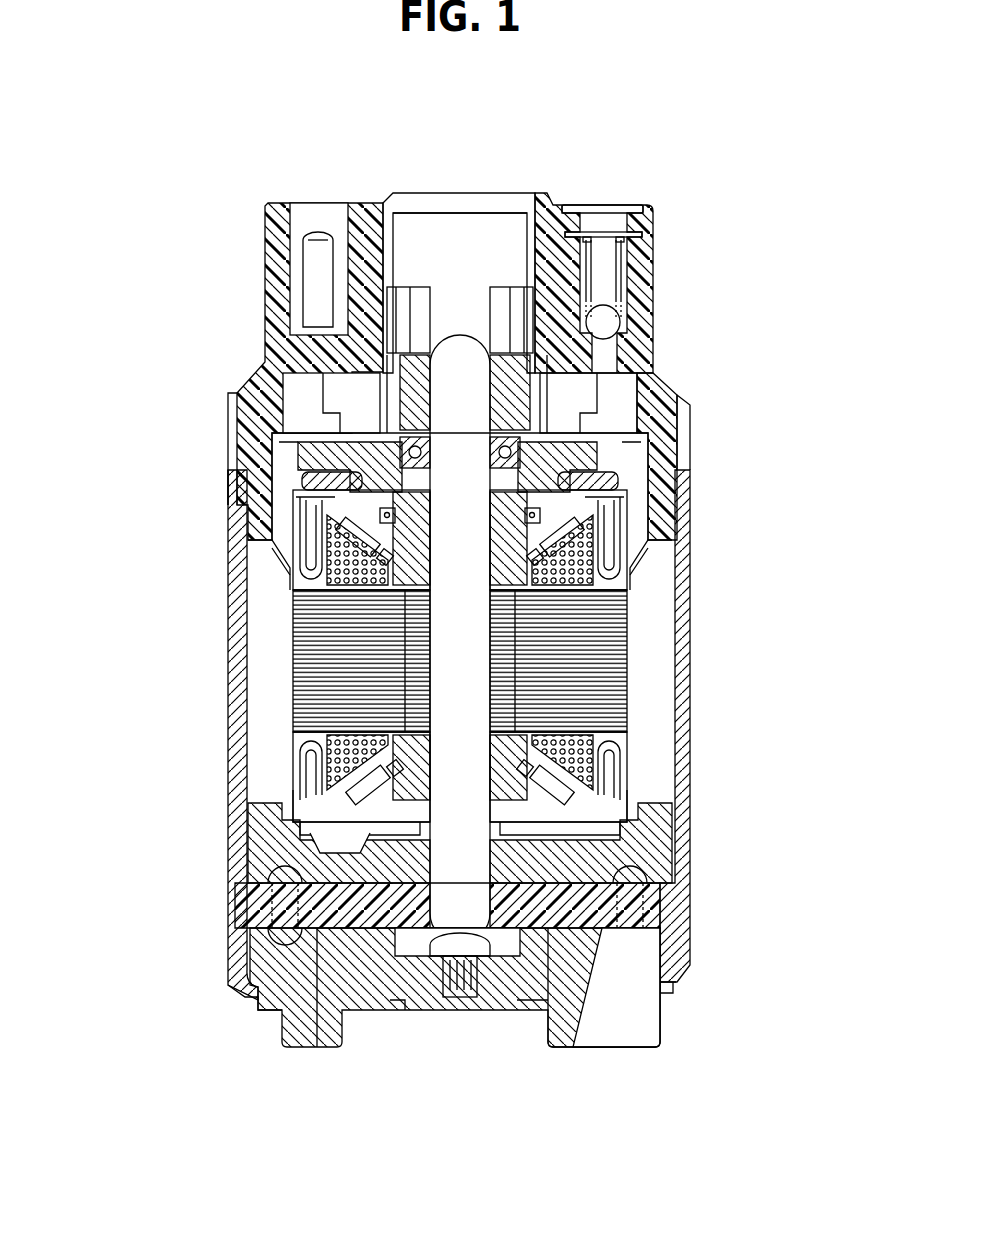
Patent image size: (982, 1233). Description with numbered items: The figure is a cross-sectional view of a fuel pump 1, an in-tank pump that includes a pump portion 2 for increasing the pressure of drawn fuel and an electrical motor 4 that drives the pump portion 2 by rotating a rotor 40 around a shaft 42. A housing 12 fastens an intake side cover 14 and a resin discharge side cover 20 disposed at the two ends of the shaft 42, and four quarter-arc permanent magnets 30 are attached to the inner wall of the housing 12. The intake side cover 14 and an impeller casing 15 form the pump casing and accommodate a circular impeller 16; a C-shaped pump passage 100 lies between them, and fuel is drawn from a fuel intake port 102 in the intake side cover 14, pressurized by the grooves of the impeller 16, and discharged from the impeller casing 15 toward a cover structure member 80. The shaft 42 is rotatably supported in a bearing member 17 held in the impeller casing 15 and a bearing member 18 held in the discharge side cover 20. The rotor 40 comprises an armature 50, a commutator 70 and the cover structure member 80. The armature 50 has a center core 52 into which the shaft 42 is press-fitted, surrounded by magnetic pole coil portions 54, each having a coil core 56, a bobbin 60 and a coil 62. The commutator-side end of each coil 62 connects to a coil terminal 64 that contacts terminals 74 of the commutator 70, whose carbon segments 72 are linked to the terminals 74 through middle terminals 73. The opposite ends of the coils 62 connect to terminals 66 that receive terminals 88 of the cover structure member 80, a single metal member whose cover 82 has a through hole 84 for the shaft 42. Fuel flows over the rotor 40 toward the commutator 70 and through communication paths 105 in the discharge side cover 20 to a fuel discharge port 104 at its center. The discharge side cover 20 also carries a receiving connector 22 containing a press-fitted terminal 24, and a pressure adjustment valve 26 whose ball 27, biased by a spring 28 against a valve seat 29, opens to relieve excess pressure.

The fuel pump 1 is at (655, 188).
The pump portion 2 is at (707, 916).
The electrical motor 4 is at (707, 636).
The housing 12 is at (690, 822).
The intake side cover 14 is at (240, 968).
The impeller casing 15 is at (600, 858).
The impeller 16 is at (383, 915).
The bearing member 17 is at (400, 912).
The bearing member 18 is at (400, 290).
The discharge side cover 20 is at (662, 215).
The receiving connector 22 is at (283, 222).
The terminal 24 is at (314, 238).
The pressure adjustment valve 26 is at (610, 290).
The ball 27 is at (632, 258).
The spring 28 is at (640, 240).
The valve seat 29 is at (612, 325).
The permanent magnets 30 is at (255, 610).
The rotor 40 is at (305, 452).
The shaft 42 is at (462, 352).
The armature 50 is at (287, 680).
The center core 52 is at (628, 668).
The magnetic pole coil portions 54 is at (287, 584).
The coil core 56 is at (290, 703).
The bobbin 60 is at (298, 735).
The coil 62 is at (318, 532).
The coil terminal 64 is at (300, 562).
The terminals 66 is at (312, 762).
The commutator 70 is at (628, 419).
The segments 72 is at (345, 462).
The middle terminals 73 is at (295, 478).
The terminals 74 is at (318, 478).
The cover structure member 80 is at (330, 820).
The cover 82 is at (583, 905).
The through hole 84 is at (533, 960).
The terminals 88 is at (312, 800).
The pump passage 100 is at (340, 868).
The fuel intake port 102 is at (622, 1015).
The fuel discharge port 104 is at (440, 262).
The communication paths 105 is at (277, 312).